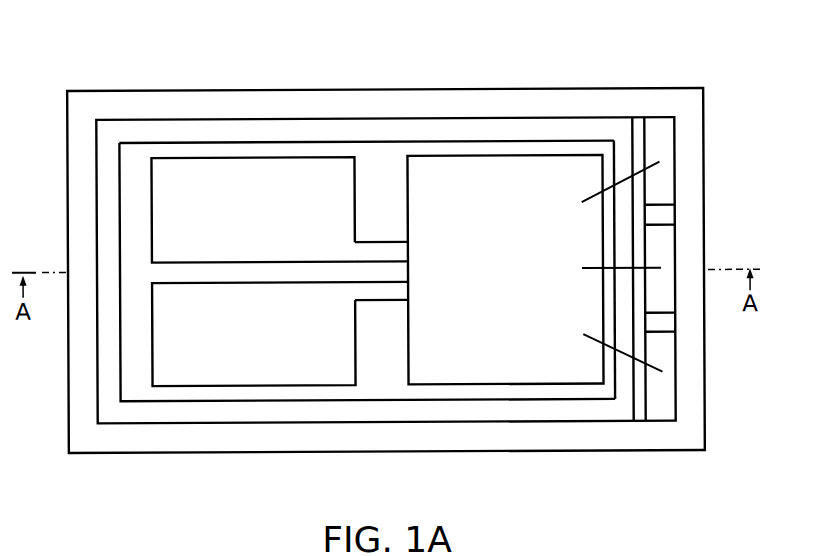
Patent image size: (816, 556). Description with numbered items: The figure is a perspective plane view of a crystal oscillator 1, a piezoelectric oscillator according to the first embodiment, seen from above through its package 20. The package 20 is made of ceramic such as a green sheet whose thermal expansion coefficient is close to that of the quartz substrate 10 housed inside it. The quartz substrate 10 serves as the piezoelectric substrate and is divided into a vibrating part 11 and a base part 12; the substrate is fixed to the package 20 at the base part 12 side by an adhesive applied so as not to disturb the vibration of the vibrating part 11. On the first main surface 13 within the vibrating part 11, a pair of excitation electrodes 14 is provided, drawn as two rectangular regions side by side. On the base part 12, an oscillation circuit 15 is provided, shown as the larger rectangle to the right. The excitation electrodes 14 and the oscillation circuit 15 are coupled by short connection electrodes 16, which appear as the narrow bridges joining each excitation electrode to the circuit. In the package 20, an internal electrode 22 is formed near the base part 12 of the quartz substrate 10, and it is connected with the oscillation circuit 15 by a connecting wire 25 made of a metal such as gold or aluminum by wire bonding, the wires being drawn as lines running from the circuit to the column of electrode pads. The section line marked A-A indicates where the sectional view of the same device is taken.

The crystal oscillator 1 is at (414, 72).
The quartz substrate 10 is at (367, 272).
The vibrating part 11 is at (247, 148).
The base part 12 is at (553, 148).
The first main surface 13 is at (136, 178).
The excitation electrodes 14 is at (195, 178).
The oscillation circuit 15 is at (494, 175).
The connection electrodes 16 is at (382, 252).
The package 20 is at (614, 88).
The internal electrode 22 is at (667, 140).
The connecting wire 25 is at (627, 185).